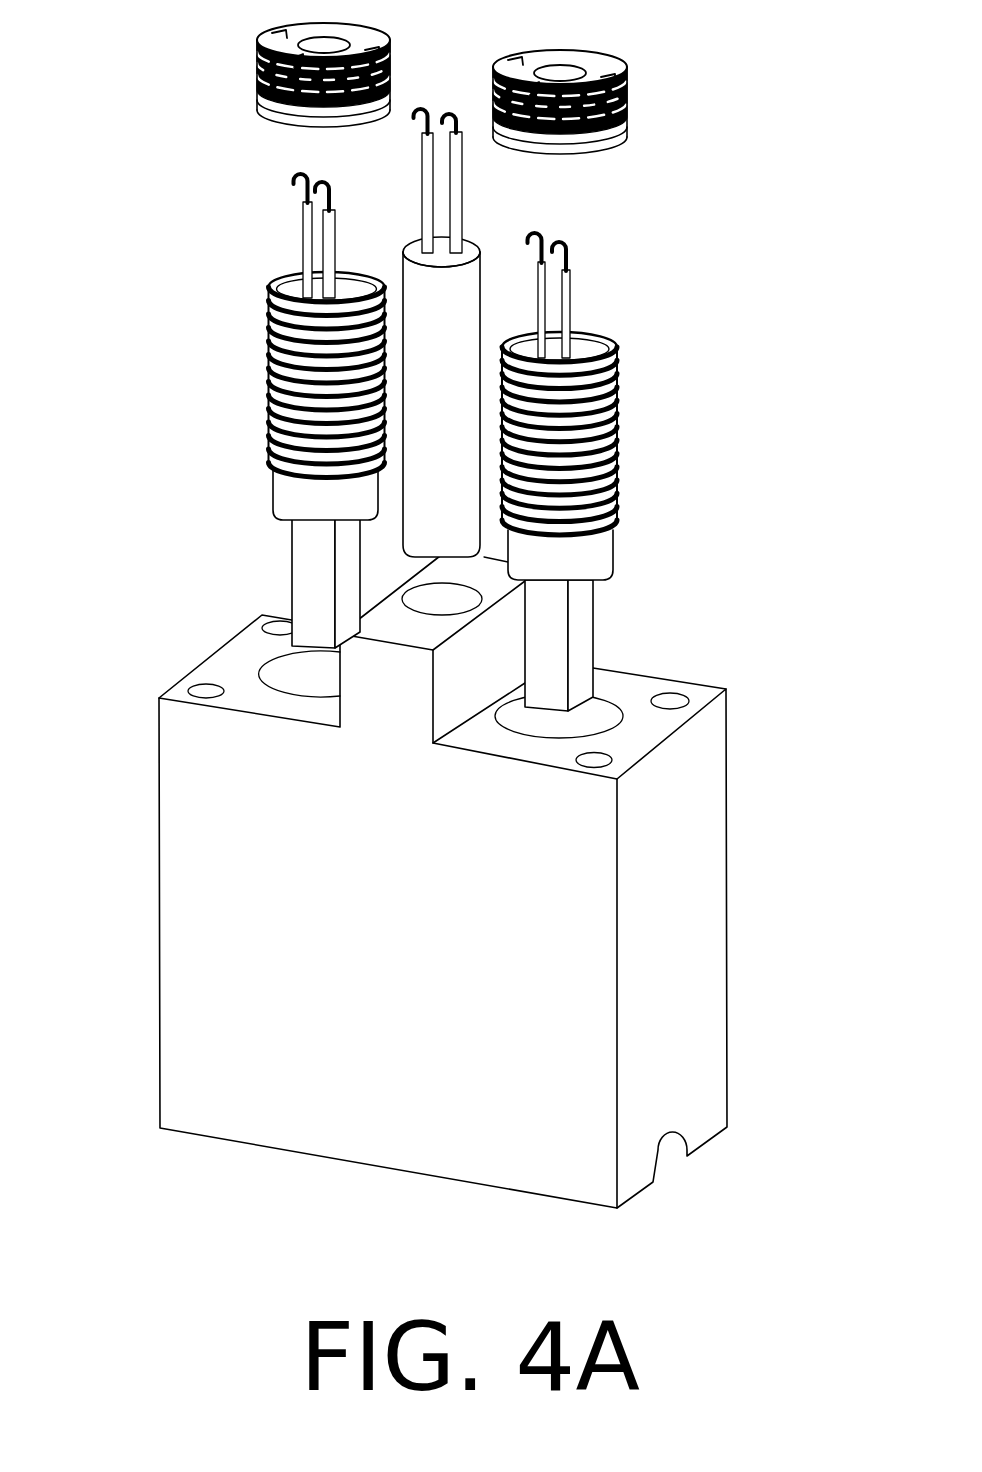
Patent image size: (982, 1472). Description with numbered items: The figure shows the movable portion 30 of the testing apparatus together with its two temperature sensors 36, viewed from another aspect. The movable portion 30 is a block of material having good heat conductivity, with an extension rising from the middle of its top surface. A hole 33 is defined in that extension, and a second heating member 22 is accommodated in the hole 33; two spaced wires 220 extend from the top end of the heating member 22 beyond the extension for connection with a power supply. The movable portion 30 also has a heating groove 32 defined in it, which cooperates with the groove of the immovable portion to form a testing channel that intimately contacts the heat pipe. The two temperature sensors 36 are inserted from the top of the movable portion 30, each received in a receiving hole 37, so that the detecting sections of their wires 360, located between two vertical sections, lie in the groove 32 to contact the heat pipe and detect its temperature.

The second heating member 22 is at (294, 332).
The wires 220 is at (420, 157).
The movable portion 30 is at (469, 881).
The heating groove 32 is at (667, 1157).
The hole 33 is at (443, 599).
The temperature sensors 36 is at (429, 367).
The wires 360 is at (310, 222).
The receiving hole 37 is at (598, 720).